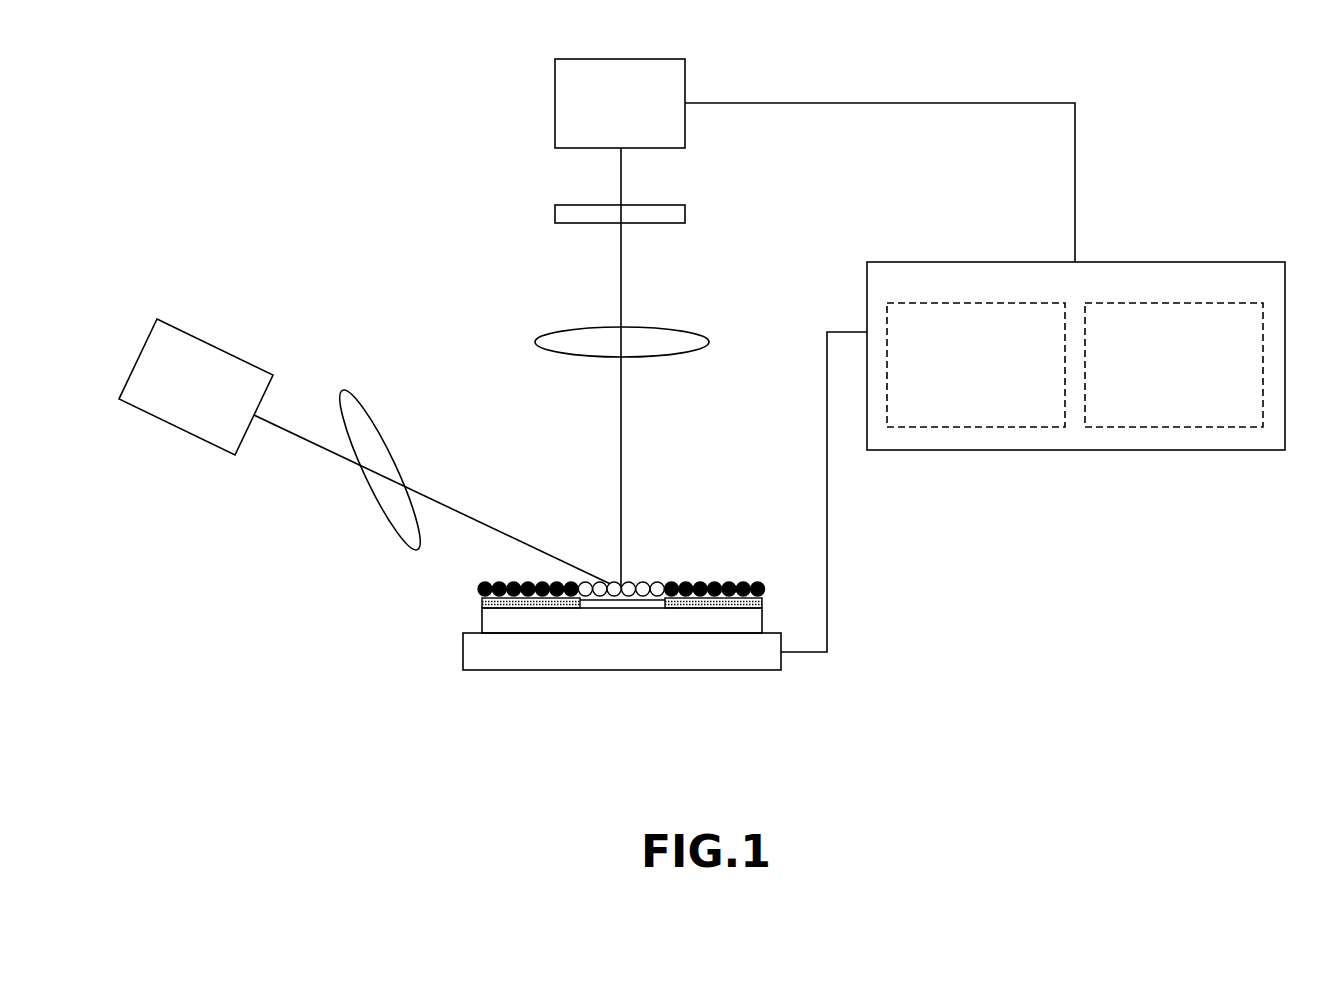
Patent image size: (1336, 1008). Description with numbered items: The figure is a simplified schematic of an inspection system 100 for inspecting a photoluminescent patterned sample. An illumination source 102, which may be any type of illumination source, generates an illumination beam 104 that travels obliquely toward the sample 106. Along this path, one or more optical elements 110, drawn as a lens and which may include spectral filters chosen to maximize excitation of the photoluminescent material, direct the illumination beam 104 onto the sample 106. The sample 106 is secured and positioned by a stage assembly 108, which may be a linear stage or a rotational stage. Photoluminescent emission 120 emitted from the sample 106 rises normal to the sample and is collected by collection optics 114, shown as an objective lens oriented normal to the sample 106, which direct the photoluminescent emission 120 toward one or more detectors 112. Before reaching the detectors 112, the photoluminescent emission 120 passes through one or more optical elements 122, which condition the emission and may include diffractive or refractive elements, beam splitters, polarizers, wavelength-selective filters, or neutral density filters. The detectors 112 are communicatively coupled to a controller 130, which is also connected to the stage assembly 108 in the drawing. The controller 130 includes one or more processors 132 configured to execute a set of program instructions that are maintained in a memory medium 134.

The inspection system 100 is at (291, 91).
The illumination source 102 is at (172, 402).
The illumination beam 104 is at (310, 443).
The sample 106 is at (482, 627).
The stage assembly 108 is at (463, 652).
The optical elements 110 is at (342, 548).
The detectors 112 is at (597, 116).
The collection optics 114 is at (535, 342).
The photoluminescent emission 120 is at (621, 277).
The optical elements 122 is at (555, 213).
The controller 130 is at (910, 287).
The processors 132 is at (932, 331).
The memory medium 134 is at (1130, 331).